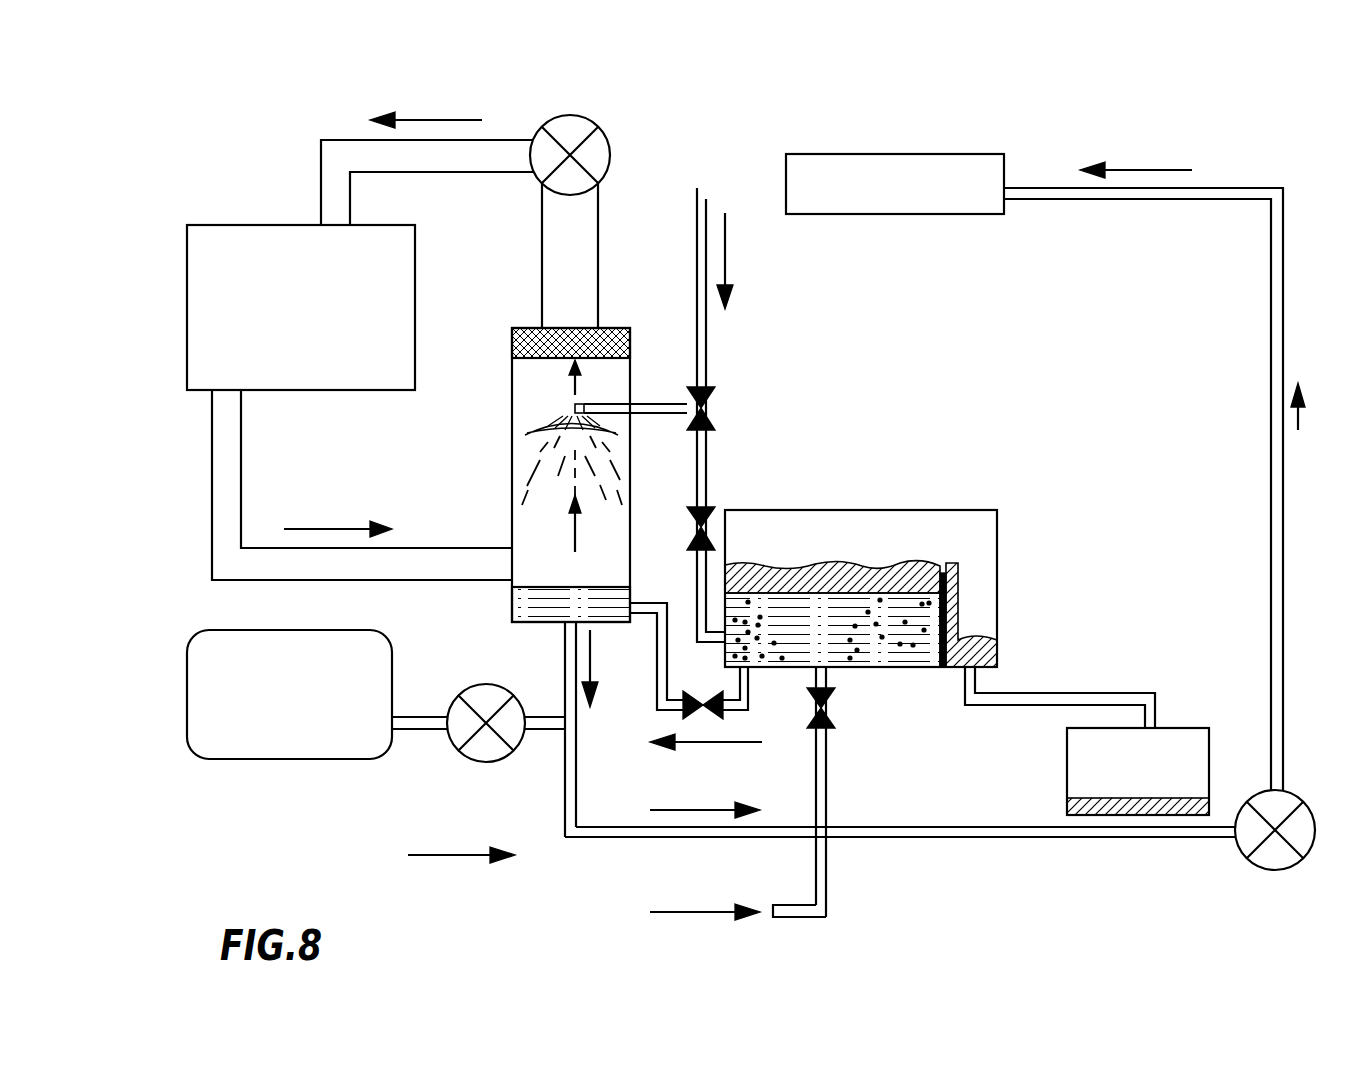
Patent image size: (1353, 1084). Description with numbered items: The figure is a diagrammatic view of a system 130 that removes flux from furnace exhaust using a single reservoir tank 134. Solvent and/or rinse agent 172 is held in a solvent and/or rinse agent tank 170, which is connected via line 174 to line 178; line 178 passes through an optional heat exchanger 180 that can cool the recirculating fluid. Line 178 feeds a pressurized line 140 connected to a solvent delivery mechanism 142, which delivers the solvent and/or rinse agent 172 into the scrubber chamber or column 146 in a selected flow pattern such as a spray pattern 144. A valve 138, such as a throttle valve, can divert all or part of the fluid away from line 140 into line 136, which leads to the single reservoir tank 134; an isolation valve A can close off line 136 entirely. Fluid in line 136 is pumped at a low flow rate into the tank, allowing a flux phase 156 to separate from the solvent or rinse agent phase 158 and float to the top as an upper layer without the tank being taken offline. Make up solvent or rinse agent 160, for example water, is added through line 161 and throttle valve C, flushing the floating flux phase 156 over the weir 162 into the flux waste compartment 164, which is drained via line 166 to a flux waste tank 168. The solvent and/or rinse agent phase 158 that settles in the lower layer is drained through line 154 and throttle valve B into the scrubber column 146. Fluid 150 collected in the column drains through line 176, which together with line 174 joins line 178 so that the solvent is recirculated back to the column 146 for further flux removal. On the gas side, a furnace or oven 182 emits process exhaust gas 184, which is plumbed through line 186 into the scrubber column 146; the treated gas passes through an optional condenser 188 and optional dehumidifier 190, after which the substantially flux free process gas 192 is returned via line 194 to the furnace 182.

The system 130 is at (1050, 112).
The single reservoir tank 134 is at (805, 510).
The line 136 is at (706, 490).
The valve 138 is at (710, 408).
The pressurized line 140 is at (673, 403).
The solvent delivery mechanism 142 is at (573, 410).
The spray pattern 144 is at (525, 482).
The scrubber chamber or column 146 is at (512, 517).
The fluid 150 is at (512, 598).
The line 154 is at (655, 663).
The flux phase 156 is at (908, 587).
The solvent or rinse agent phase 158 is at (893, 638).
The make up solvent or rinse agent 160 is at (825, 887).
The line 161 is at (827, 798).
The weir 162 is at (955, 567).
The flux waste compartment 164 is at (997, 605).
The line 166 is at (1042, 705).
The flux waste tank 168 is at (1188, 728).
The solvent and/or rinse agent tank 170 is at (187, 703).
The solvent and/or rinse agent 172 is at (284, 698).
The line 174 is at (423, 731).
The line 176 is at (565, 662).
The line 178 is at (565, 783).
The heat exchanger 180 is at (868, 154).
The furnace or oven 182 is at (187, 286).
The process exhaust gas 184 is at (212, 442).
The line 186 is at (225, 529).
The condenser 188 is at (527, 342).
The dehumidifier 190 is at (598, 275).
The substantially flux free process gas 192 is at (500, 157).
The line 194 is at (338, 138).